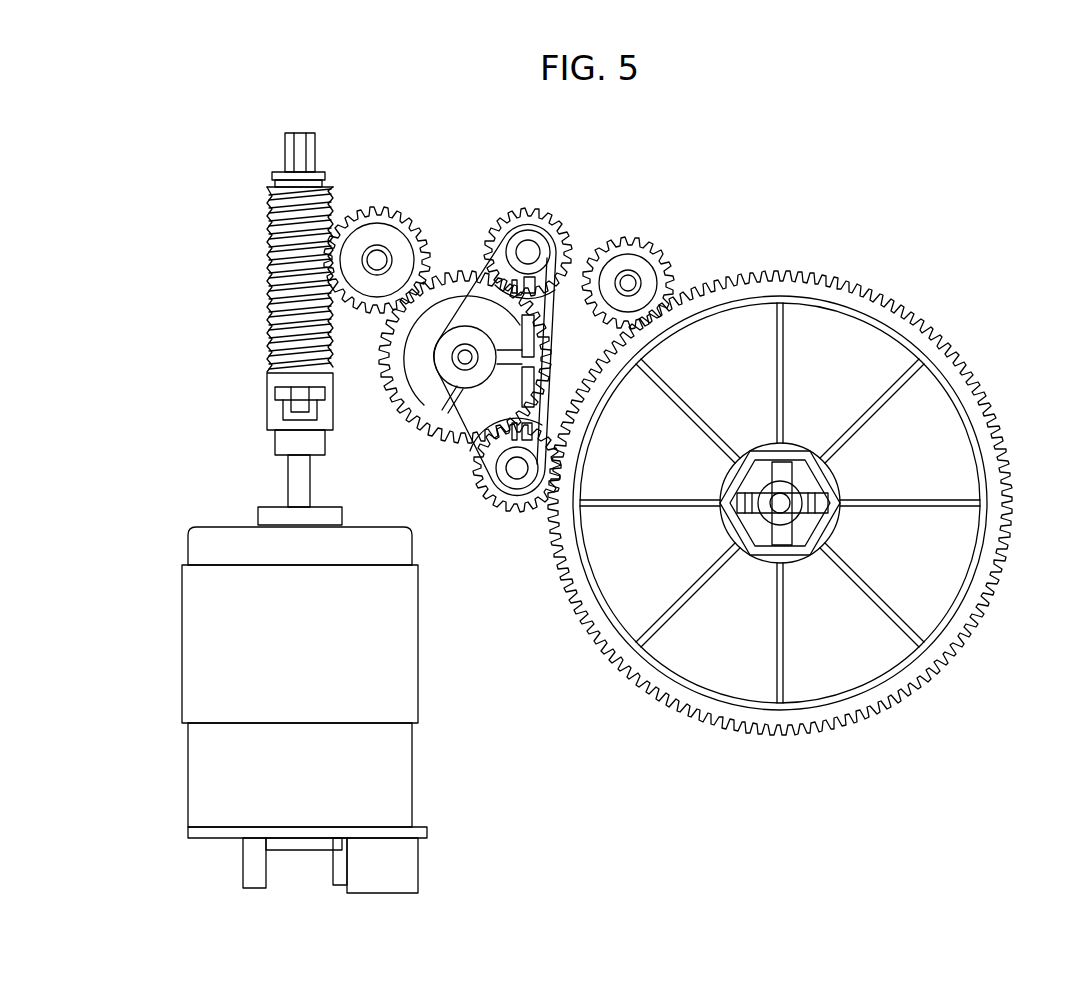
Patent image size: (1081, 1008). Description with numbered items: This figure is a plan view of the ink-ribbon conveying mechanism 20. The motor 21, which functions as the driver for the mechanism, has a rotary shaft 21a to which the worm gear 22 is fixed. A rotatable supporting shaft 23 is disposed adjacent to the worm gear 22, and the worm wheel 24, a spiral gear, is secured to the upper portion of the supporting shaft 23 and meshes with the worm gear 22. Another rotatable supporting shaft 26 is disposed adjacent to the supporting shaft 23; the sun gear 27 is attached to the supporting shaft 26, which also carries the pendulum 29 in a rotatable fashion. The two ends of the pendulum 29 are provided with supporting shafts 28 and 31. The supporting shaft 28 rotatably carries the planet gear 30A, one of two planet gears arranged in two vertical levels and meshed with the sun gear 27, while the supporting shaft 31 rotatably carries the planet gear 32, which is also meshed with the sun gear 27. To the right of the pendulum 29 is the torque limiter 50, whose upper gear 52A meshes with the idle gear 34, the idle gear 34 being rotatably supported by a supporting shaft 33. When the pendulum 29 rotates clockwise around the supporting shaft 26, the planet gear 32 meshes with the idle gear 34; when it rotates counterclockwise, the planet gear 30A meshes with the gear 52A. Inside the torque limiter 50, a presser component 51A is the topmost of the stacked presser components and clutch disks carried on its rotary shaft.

The ink-ribbon conveying mechanism 20 is at (933, 220).
The motor 21 is at (195, 647).
The rotary shaft 21a is at (290, 133).
The worm gear 22 is at (268, 248).
The supporting shaft 23 is at (375, 256).
The worm wheel 24 is at (375, 203).
The supporting shaft 26 is at (465, 360).
The sun gear 27 is at (453, 398).
The supporting shaft 28 is at (515, 470).
The pendulum 29 is at (505, 327).
The planet gear 30A is at (503, 542).
The supporting shaft 31 is at (543, 242).
The planet gear 32 is at (561, 218).
The supporting shaft 33 is at (678, 256).
The idle gear 34 is at (668, 273).
The torque limiter 50 is at (812, 503).
The presser component 51A is at (942, 432).
The gear 52A is at (922, 323).